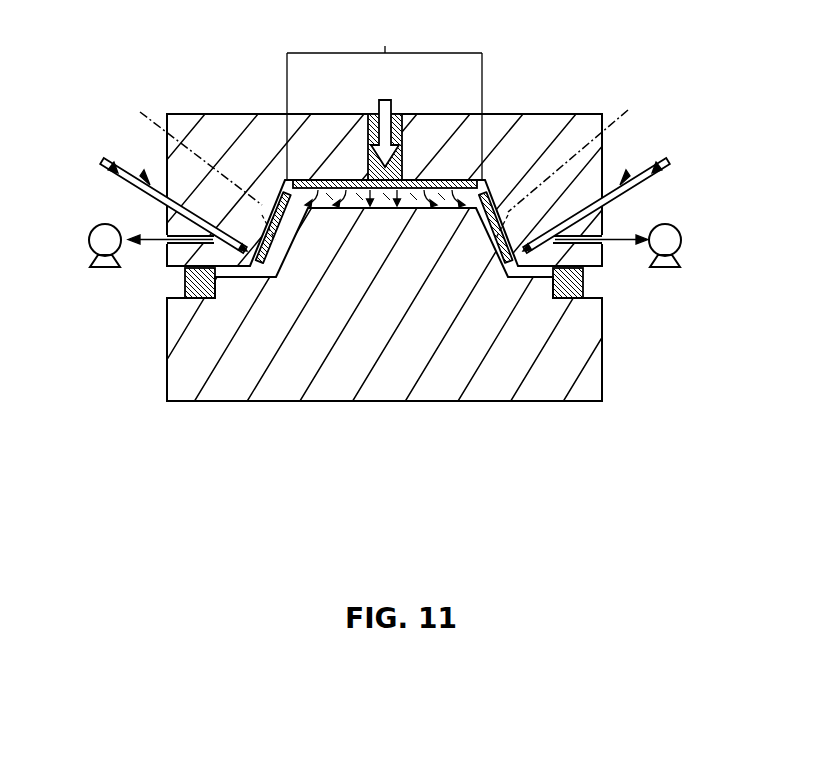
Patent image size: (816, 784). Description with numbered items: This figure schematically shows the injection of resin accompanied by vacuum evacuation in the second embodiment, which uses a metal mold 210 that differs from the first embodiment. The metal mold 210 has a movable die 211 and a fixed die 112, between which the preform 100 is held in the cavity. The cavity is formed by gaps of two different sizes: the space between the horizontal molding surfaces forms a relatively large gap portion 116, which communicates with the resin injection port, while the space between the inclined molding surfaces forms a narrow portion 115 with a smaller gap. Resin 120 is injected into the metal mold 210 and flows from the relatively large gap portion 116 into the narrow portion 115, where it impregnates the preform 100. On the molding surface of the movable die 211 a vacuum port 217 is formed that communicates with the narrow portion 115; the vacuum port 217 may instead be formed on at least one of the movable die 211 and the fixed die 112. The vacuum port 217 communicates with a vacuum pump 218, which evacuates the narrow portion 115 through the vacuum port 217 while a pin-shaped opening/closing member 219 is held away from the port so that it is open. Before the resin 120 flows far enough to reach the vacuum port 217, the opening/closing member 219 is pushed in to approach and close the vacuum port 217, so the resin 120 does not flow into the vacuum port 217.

The metal mold 210 is at (593, 88).
The movable die 211 is at (541, 125).
The fixed die 112 is at (583, 347).
The preform 100 is at (285, 183).
The resin 120 is at (403, 160).
The relatively large gap portion 116 is at (384, 101).
The narrow portion 115 is at (386, 154).
The opening/closing member 219 is at (120, 186).
The vacuum pump 218 is at (88, 240).
The vacuum port 217 is at (262, 266).